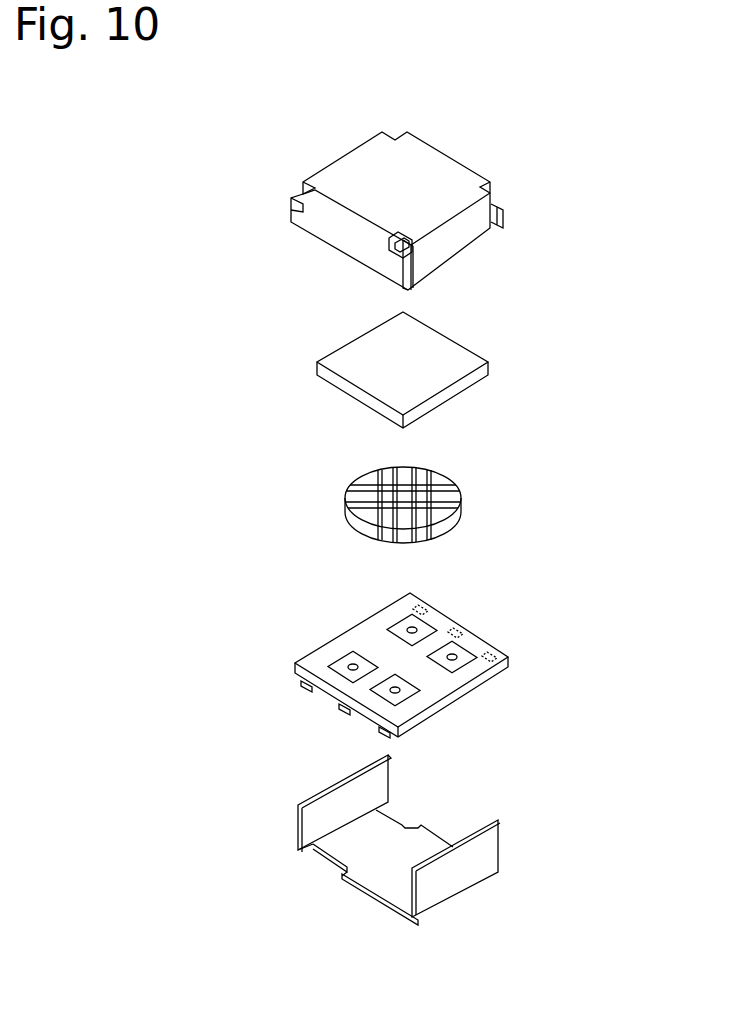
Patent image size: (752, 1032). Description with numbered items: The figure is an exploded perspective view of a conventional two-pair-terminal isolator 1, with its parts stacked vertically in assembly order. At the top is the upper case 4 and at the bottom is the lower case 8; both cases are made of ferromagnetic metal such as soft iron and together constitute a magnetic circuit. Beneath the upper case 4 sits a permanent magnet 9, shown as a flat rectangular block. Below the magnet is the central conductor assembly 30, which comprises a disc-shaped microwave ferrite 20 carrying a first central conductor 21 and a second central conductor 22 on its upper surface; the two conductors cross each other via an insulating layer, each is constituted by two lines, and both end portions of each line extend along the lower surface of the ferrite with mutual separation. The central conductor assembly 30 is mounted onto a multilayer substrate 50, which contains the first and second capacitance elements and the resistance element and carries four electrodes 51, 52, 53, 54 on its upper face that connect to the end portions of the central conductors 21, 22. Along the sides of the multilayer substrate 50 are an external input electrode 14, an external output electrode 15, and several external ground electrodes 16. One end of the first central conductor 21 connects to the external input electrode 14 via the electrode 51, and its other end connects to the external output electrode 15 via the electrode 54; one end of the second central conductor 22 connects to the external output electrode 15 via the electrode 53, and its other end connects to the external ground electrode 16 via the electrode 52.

The two-pair-terminal isolator 1 is at (322, 123).
The upper case 4 is at (466, 161).
The lower case 8 is at (440, 820).
The permanent magnet 9 is at (463, 342).
The external input electrode 14 is at (306, 689).
The external output electrode 15 is at (430, 604).
The external ground electrode 16 is at (545, 610).
The microwave ferrite 20 is at (441, 475).
The first central conductor 21 is at (462, 501).
The second central conductor 22 is at (422, 467).
The central conductor assembly 30 is at (398, 487).
The multilayer substrate 50 is at (404, 664).
The electrode 51 is at (338, 660).
The electrode 52 is at (400, 625).
The electrode 53 is at (402, 707).
The electrode 54 is at (462, 668).